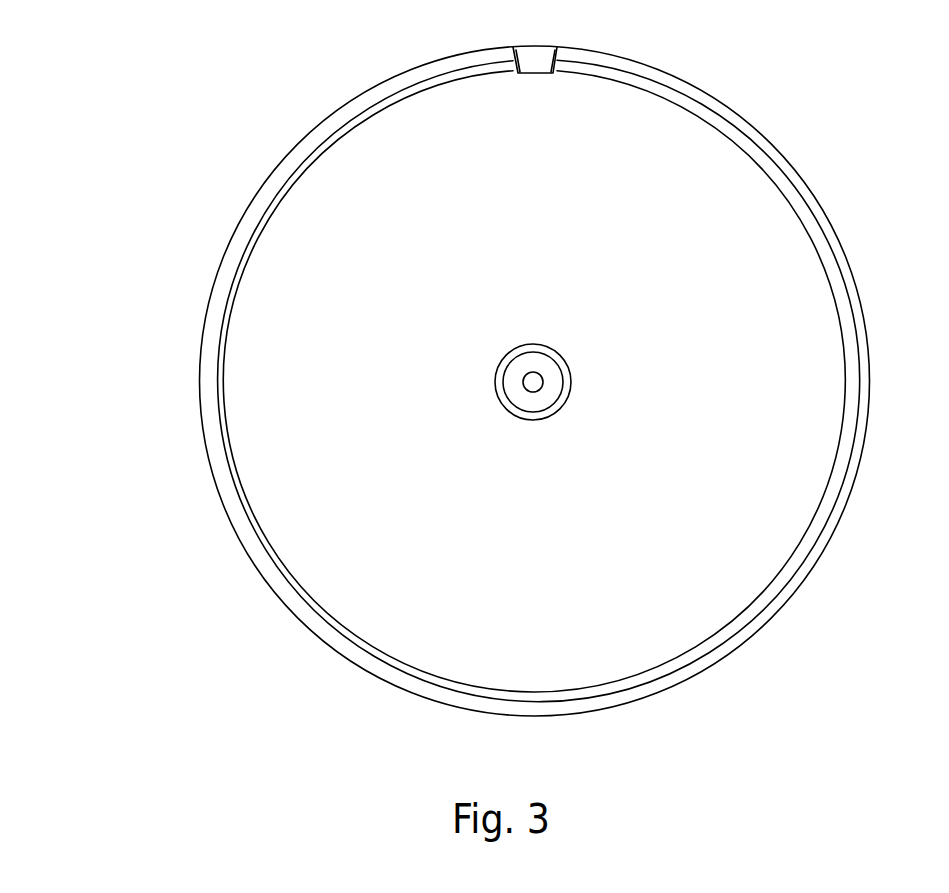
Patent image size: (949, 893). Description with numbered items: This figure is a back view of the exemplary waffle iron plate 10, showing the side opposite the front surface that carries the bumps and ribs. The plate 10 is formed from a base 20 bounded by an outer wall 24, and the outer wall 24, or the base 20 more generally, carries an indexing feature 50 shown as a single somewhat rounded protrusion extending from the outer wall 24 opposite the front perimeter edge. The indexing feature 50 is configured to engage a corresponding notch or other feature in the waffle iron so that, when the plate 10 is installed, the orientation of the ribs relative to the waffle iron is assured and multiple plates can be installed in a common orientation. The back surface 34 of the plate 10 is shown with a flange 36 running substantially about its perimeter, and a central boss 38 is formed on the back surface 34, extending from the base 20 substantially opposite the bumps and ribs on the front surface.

The waffle iron plate 10 is at (200, 157).
The base 20 is at (856, 597).
The outer wall 24 is at (838, 519).
The back surface 34 is at (728, 410).
The flange 36 is at (843, 300).
The central boss 38 is at (567, 350).
The indexing feature 50 is at (541, 55).